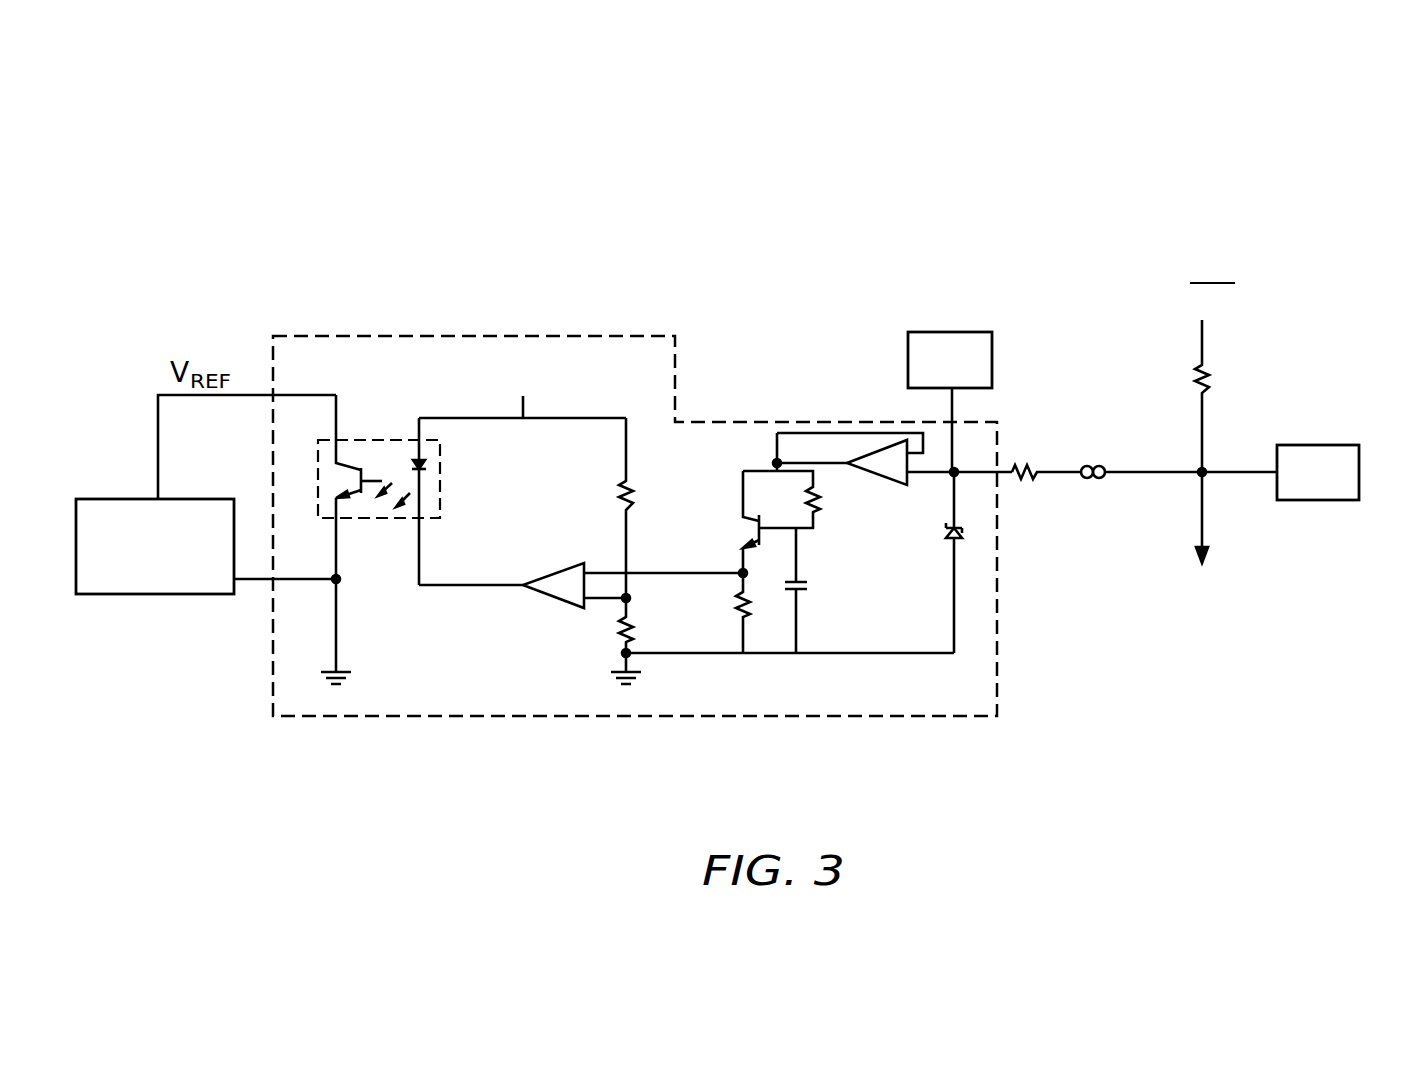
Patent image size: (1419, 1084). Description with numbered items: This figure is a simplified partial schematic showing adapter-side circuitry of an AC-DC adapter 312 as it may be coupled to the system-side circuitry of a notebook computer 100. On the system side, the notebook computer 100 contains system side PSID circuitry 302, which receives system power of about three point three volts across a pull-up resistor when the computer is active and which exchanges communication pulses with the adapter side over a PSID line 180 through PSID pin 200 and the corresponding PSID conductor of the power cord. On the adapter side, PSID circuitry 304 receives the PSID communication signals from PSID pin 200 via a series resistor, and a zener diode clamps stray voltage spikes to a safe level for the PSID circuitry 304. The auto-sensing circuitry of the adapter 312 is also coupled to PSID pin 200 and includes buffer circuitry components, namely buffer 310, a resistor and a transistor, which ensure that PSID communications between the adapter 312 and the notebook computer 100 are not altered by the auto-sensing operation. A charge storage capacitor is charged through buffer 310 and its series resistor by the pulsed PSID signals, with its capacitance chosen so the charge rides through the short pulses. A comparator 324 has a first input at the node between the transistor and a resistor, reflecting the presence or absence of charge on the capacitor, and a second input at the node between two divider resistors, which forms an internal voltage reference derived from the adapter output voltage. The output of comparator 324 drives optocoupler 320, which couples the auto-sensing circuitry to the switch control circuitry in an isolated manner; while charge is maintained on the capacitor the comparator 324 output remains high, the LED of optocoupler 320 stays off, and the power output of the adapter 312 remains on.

The notebook computer 100 is at (264, 200).
The system PSID line 180 is at (1133, 477).
The PSID pin 200 is at (1085, 480).
The system side PSID circuitry 302 is at (150, 594).
The PSID circuitry 304 is at (930, 332).
The buffer 310 is at (897, 484).
The adapter 312 is at (584, 336).
The optocoupler 320 is at (351, 440).
The comparator 324 is at (554, 597).